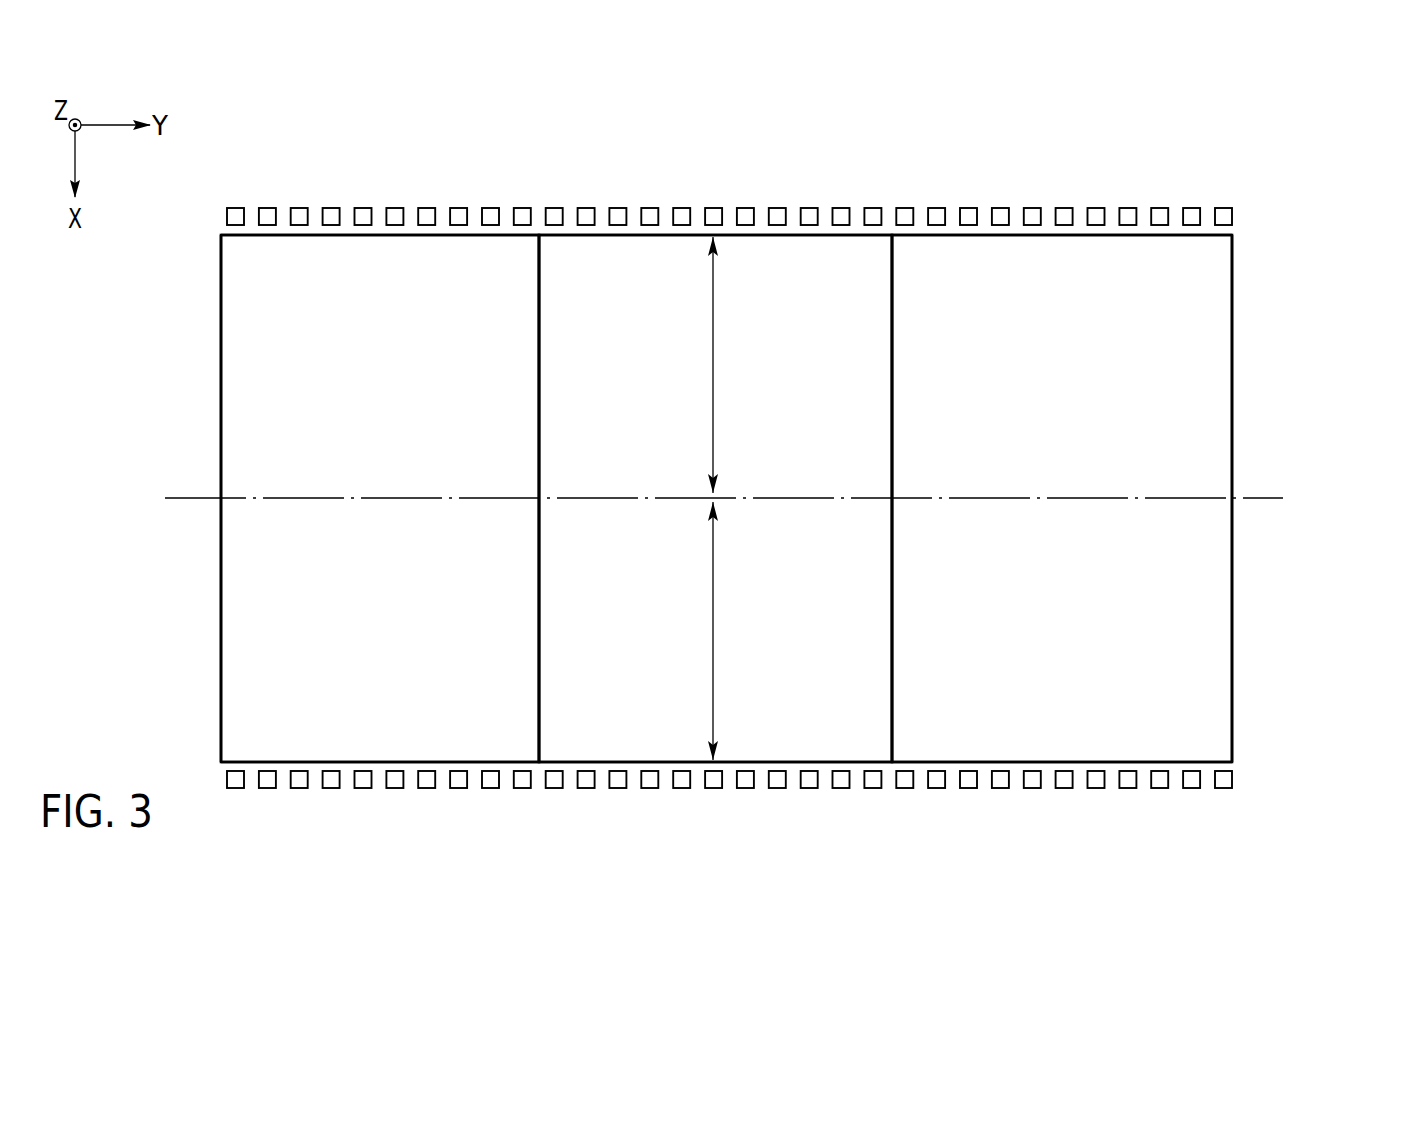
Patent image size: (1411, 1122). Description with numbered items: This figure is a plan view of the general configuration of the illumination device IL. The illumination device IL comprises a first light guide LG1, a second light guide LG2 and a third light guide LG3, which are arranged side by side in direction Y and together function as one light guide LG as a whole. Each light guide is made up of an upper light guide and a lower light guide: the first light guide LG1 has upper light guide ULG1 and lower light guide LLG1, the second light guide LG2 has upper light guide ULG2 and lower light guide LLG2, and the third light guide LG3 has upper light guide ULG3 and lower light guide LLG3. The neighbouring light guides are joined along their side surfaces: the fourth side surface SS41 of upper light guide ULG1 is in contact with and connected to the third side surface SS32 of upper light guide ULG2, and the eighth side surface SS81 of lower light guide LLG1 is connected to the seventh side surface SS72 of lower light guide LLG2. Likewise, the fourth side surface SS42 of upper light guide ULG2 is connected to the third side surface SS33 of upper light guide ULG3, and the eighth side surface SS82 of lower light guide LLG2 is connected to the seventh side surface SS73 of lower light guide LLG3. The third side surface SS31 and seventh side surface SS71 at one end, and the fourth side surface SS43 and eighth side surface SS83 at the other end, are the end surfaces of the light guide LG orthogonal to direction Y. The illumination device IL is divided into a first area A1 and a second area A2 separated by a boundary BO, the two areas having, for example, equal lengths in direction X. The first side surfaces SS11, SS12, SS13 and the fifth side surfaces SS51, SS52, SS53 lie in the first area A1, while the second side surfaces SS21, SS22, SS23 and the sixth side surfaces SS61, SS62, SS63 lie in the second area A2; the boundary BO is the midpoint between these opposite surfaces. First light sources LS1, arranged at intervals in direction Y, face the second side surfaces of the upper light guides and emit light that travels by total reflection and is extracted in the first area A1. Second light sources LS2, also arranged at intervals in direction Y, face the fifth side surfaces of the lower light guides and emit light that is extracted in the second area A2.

The illumination device IL is at (1280, 115).
The light guide LG is at (1297, 325).
The upper light guide ULG1 is at (298, 498).
The lower light guide LLG1 is at (298, 498).
The first light guide LG1 is at (236, 455).
The upper light guide ULG2 is at (733, 567).
The lower light guide LLG2 is at (733, 567).
The second light guide LG2 is at (860, 745).
The upper light guide ULG3 is at (1144, 498).
The lower light guide LLG3 is at (1144, 498).
The third light guide LG3 is at (1213, 392).
The first side surface SS11 is at (380, 808).
The fifth side surface SS51 is at (283, 762).
The first side surface SS12 is at (715, 808).
The fifth side surface SS52 is at (603, 762).
The first side surface SS13 is at (1062, 808).
The fifth side surface SS53 is at (1018, 762).
The second side surface SS21 is at (382, 190).
The sixth side surface SS61 is at (475, 232).
The second side surface SS22 is at (715, 190).
The sixth side surface SS62 is at (827, 232).
The second side surface SS23 is at (1062, 190).
The sixth side surface SS63 is at (1018, 232).
The third side surface SS31 is at (140, 498).
The seventh side surface SS71 is at (221, 340).
The third side surface SS32 is at (618, 630).
The seventh side surface SS72 is at (539, 565).
The third side surface SS33 is at (974, 630).
The seventh side surface SS73 is at (892, 565).
The fourth side surface SS41 is at (457, 366).
The eighth side surface SS81 is at (539, 380).
The fourth side surface SS42 is at (811, 366).
The eighth side surface SS82 is at (892, 380).
The fourth side surface SS43 is at (1307, 498).
The eighth side surface SS83 is at (1232, 548).
The first light sources LS1 is at (331, 208).
The second light sources LS2 is at (394, 788).
The boundary BO is at (741, 495).
The first area A1 is at (697, 631).
The second area A2 is at (697, 365).